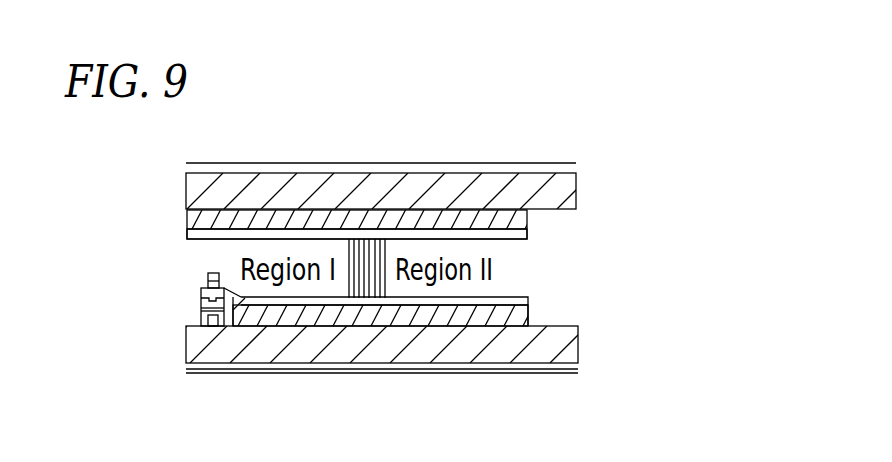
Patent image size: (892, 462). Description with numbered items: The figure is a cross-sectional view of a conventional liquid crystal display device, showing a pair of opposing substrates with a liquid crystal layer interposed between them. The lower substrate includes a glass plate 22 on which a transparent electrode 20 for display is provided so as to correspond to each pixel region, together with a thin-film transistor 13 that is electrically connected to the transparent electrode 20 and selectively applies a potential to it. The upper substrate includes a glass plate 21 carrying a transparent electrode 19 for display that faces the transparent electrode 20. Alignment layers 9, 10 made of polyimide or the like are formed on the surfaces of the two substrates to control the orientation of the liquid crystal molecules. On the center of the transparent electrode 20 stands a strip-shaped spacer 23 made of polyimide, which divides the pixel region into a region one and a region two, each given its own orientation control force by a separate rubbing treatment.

The alignment layer 9 is at (527, 231).
The alignment layer 10 is at (294, 302).
The thin-film transistor 13 is at (203, 322).
The transparent electrode 19 is at (488, 217).
The transparent electrode 20 is at (394, 316).
The glass plate 21 is at (263, 182).
The glass plate 22 is at (500, 350).
The strip-shaped spacer 23 is at (363, 240).